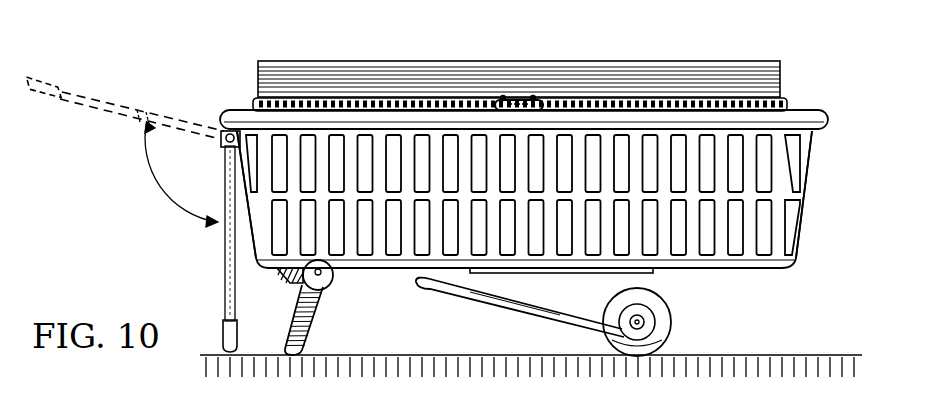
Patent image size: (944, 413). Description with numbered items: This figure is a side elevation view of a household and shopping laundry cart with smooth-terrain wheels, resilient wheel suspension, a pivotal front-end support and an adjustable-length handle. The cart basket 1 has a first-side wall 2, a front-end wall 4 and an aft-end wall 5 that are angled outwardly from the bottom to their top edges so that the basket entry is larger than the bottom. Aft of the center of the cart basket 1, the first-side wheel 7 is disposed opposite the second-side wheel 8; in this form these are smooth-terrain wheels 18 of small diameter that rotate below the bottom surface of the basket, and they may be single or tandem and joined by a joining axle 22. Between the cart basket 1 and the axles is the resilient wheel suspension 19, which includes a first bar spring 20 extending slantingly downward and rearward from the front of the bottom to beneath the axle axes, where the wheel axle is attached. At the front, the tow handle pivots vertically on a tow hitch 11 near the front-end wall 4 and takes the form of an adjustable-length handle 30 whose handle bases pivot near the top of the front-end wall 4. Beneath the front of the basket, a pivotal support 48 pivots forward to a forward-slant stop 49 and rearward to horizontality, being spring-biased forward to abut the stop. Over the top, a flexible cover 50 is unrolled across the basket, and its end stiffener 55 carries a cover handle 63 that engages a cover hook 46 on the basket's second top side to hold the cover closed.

The cart basket 1 is at (840, 187).
The first-side wall 2 is at (433, 195).
The front-end wall 4 is at (247, 197).
The aft-end wall 5 is at (800, 197).
The first-side wheel 7 is at (650, 348).
The second-side wheel 8 is at (610, 303).
The tow hitch 11 is at (228, 146).
The smooth-terrain wheels 18 is at (688, 323).
The resilient wheel suspension 19 is at (425, 305).
The first bar spring 20 is at (537, 316).
The joining axle 22 is at (627, 312).
The adjustable-length handle 30 is at (108, 119).
The cover hook 46 is at (503, 98).
The pivotal support 48 is at (320, 338).
The forward-slant stop 49 is at (285, 280).
The flexible cover 50 is at (371, 78).
The end stiffener 55 is at (604, 106).
The cover handle 63 is at (520, 98).